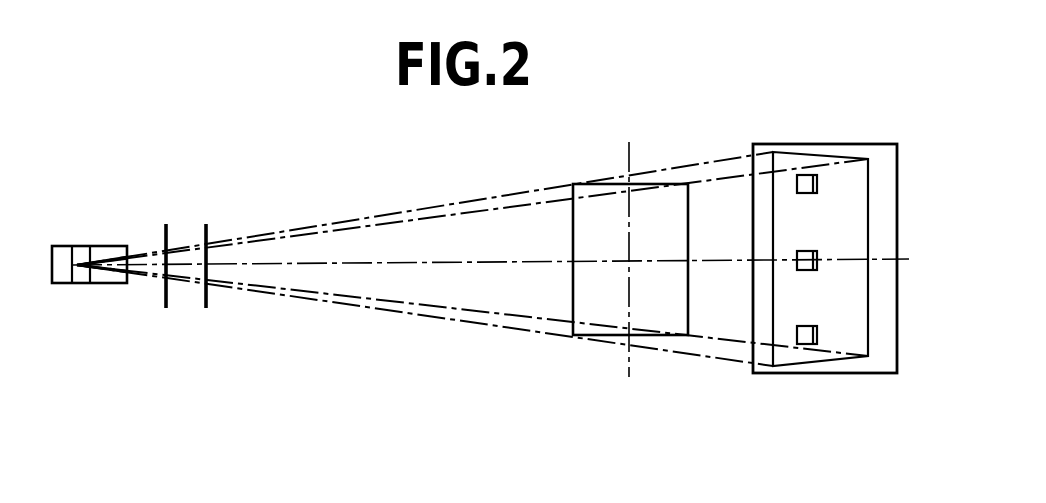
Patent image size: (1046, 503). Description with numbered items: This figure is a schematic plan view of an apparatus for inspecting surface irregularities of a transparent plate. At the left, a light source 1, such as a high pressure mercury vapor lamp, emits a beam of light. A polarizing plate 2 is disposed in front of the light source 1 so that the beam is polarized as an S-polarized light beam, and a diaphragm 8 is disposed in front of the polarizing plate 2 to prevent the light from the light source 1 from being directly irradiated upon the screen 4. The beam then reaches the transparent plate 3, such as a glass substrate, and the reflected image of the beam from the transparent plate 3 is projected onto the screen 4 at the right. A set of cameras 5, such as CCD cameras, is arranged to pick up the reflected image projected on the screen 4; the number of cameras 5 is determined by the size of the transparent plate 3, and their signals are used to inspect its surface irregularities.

The light source 1 is at (81, 287).
The polarizing plate 2 is at (166, 300).
The diaphragm 8 is at (206, 300).
The transparent plate 3 is at (573, 295).
The screen 4 is at (880, 374).
The cameras 5 is at (806, 190).